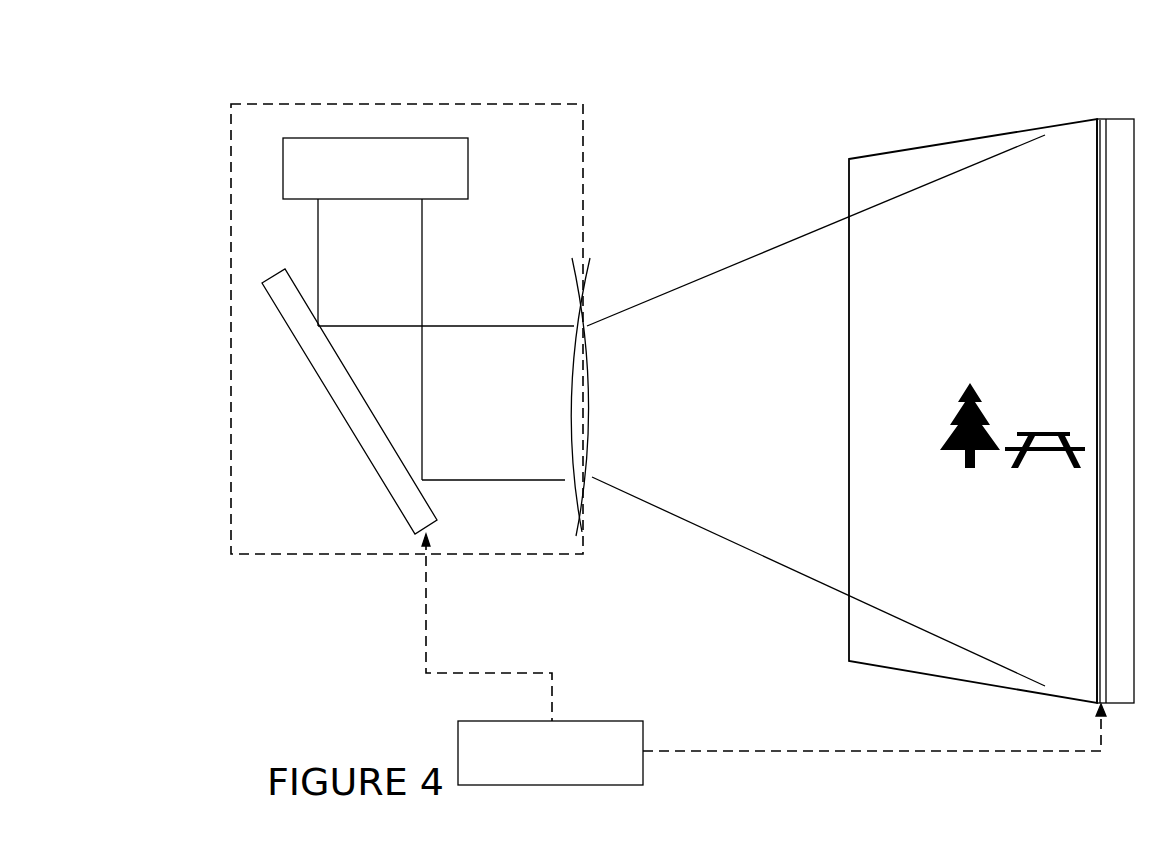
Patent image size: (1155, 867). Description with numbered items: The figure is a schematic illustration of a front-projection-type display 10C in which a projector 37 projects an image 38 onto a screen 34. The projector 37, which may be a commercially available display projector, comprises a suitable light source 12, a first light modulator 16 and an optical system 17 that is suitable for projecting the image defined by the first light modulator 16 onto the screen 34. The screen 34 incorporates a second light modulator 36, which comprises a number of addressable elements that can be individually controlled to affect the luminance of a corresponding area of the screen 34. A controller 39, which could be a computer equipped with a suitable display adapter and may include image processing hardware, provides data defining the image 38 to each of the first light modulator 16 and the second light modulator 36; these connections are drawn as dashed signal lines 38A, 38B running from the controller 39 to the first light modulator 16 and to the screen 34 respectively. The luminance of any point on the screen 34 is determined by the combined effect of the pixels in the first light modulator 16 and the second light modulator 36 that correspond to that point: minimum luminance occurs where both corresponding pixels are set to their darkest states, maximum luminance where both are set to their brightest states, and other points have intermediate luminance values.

The front-projection-type display 10C is at (326, 78).
The light source 12 is at (466, 138).
The first light modulator 16 is at (404, 498).
The optical system 17 is at (572, 304).
The screen 34 is at (1118, 118).
The second light modulator 36 is at (1097, 119).
The projector 37 is at (612, 150).
The image 38 is at (985, 460).
The mirror control signal line 38A is at (433, 645).
The display control signal line 38B is at (738, 751).
The controller 39 is at (623, 720).